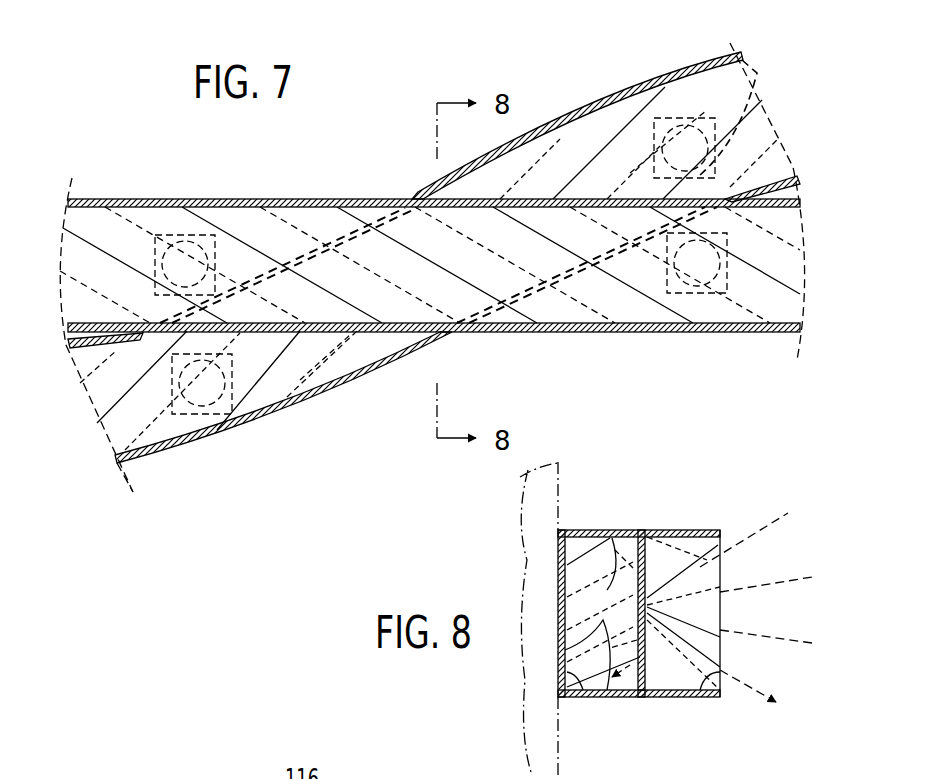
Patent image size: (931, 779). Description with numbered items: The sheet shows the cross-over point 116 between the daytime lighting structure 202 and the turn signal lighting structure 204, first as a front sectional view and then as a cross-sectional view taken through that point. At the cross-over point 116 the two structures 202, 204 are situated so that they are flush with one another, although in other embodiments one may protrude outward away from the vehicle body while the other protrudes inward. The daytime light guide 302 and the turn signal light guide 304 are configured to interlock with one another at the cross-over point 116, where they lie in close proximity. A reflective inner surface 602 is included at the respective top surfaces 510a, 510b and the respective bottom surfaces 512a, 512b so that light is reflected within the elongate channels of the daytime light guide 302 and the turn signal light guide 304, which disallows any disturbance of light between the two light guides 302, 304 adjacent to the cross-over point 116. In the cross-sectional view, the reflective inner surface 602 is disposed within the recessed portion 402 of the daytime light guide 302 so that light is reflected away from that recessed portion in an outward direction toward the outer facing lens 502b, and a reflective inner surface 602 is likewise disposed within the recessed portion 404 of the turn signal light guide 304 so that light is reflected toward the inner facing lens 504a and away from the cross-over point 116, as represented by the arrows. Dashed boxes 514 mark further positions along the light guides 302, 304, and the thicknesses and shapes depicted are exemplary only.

In FIG. 7, the cross-over point 116 is at (418, 183).
In FIG. 8, the cross-over point 116 is at (643, 700).
In FIG. 7, the daytime lighting structure 202 is at (86, 194).
In FIG. 7, the turn signal lighting structure 204 is at (320, 405).
In FIG. 7, the daytime light guide 302 is at (568, 333).
In FIG. 8, the daytime light guide 302 is at (680, 533).
In FIG. 7, the turn signal light guide 304 is at (268, 425).
In FIG. 8, the turn signal light guide 304 is at (600, 533).
In FIG. 8, the recessed portion 402 is at (640, 533).
In FIG. 8, the recessed portion 404 is at (565, 533).
In FIG. 8, the outer facing lens 502b is at (720, 612).
In FIG. 8, the inner facing lens 504a is at (570, 690).
In FIG. 7, the top surface 510a is at (676, 80).
In FIG. 7, the top surface 510b is at (800, 182).
In FIG. 7, the bottom surface 512a is at (67, 340).
In FIG. 7, the bottom surface 512b is at (167, 462).
In FIG. 7, the light source 514 is at (203, 233).
In FIG. 7, the reflective inner surface 602 is at (262, 198).
In FIG. 8, the reflective inner surface 602 is at (647, 568).